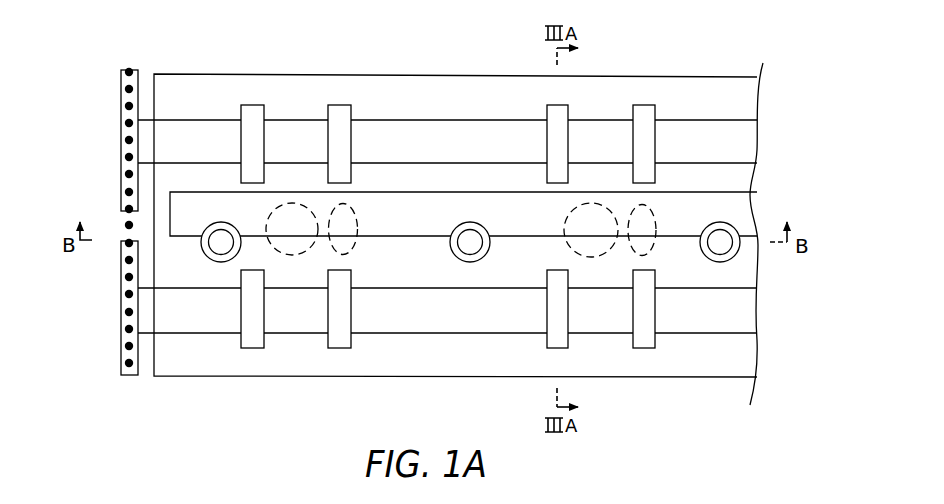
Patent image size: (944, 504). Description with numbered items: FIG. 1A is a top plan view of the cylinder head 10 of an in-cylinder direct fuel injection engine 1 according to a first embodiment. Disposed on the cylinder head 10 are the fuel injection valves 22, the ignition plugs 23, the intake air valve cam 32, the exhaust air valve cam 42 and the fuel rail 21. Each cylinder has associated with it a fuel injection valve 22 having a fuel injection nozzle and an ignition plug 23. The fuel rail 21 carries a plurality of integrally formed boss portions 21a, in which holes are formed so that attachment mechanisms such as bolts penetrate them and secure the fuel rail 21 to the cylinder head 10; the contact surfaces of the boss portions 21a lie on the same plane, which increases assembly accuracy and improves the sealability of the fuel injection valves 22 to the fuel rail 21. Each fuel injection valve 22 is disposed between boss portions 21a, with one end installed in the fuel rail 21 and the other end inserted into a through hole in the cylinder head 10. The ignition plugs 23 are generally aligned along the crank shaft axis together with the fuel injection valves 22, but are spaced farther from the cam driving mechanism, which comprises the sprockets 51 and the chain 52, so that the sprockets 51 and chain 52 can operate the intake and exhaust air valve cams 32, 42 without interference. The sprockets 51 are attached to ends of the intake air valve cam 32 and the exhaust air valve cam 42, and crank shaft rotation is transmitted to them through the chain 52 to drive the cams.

The in-cylinder direct fuel injection engine 1 is at (768, 41).
The cylinder head 10 is at (193, 88).
The fuel rail 21 is at (742, 211).
The boss portion 21a is at (214, 244).
The fuel injection valve 22 is at (296, 256).
The ignition plug 23 is at (348, 252).
The intake air valve cam 32 is at (745, 313).
The exhaust air valve cam 42 is at (745, 149).
The sprocket 51 is at (121, 146).
The chain 52 is at (124, 225).